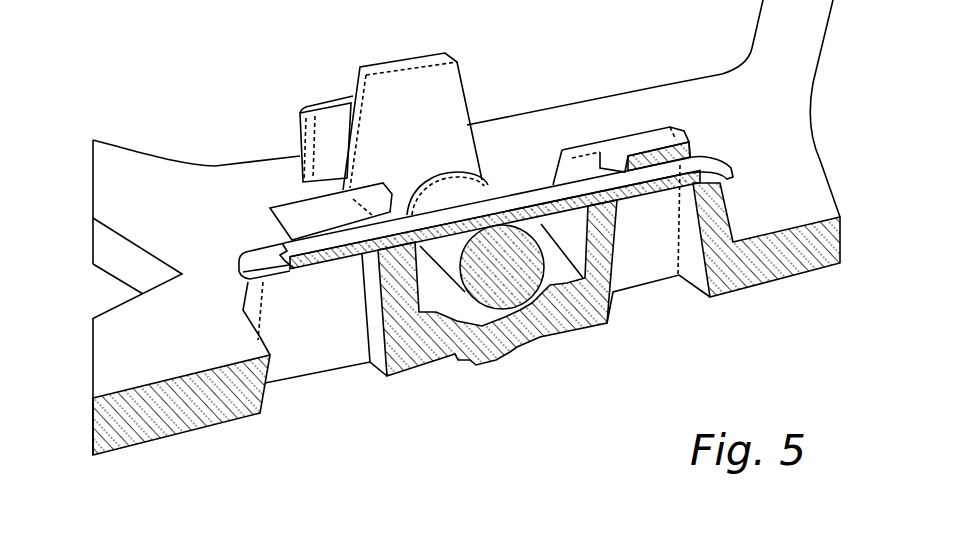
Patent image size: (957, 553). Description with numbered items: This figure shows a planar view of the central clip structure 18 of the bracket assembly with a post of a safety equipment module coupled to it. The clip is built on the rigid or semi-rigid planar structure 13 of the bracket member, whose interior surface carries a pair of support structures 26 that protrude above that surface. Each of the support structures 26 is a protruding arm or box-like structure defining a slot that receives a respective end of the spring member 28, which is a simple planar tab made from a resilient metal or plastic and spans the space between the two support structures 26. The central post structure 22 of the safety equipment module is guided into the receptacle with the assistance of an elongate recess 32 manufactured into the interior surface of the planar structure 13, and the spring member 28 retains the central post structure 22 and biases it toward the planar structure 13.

The planar structure 13 is at (322, 394).
The central clip structure 18 is at (518, 108).
The central post structure 22 is at (483, 326).
The support structures 26 is at (296, 213).
The spring member 28 is at (524, 194).
The elongate recess 32 is at (529, 323).